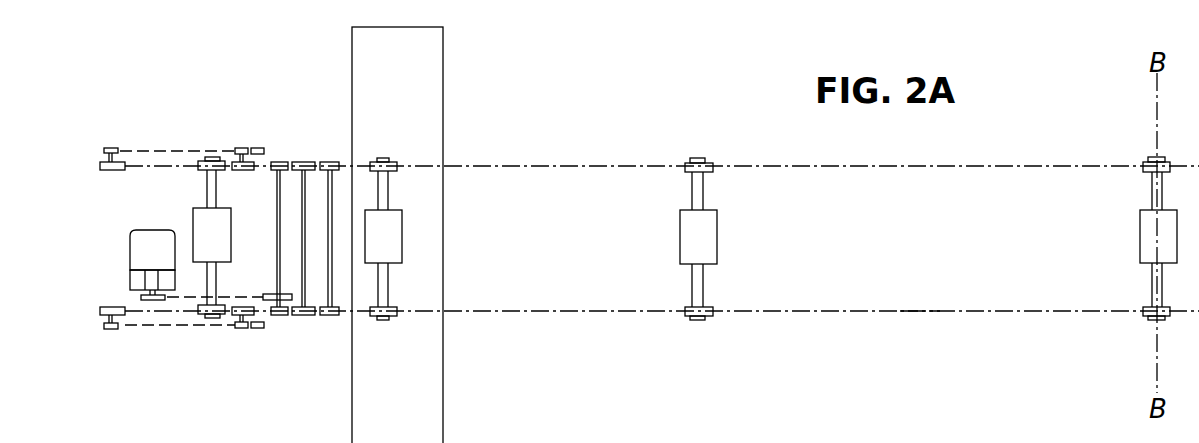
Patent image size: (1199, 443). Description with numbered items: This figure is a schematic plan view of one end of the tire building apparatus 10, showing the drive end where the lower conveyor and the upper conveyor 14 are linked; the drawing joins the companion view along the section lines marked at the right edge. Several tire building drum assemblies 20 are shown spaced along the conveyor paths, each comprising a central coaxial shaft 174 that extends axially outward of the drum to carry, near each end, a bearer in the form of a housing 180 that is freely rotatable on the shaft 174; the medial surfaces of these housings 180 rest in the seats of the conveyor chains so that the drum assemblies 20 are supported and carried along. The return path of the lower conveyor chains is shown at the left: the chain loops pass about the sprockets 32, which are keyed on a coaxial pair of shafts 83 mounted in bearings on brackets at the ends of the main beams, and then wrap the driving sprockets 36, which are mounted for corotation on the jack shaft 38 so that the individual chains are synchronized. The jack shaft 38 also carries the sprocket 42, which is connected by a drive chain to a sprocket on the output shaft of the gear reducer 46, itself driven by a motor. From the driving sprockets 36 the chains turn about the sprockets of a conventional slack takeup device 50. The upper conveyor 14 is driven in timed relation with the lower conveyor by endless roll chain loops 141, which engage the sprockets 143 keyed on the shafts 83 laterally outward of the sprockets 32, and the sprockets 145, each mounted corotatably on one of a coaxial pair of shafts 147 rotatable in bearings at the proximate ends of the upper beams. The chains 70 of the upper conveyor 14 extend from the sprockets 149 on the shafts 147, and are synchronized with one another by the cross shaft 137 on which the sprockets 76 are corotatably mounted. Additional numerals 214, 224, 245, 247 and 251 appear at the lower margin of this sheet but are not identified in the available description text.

The tire building apparatus 10 is at (569, 312).
The upper conveyor 14 is at (918, 311).
The tire building drum assembly 20 is at (193, 232).
The sprocket 32 is at (100, 170).
The driving sprocket 36 is at (274, 170).
The jack shaft 38 is at (277, 224).
The sprocket 42 is at (271, 295).
The gear reducer 46 is at (135, 278).
The slack takeup device 50 is at (330, 316).
The chain 70 is at (562, 166).
The sprocket 76 is at (296, 162).
The shaft 83 is at (104, 163).
The cross shaft 137 is at (305, 192).
The endless roll chain loop 141 is at (147, 150).
The sprocket 143 is at (110, 148).
The sprocket 145 is at (241, 148).
The shaft 147 is at (235, 162).
The sprocket 149 is at (232, 170).
The central coaxial shaft 174 is at (388, 290).
The housing 180 is at (397, 163).
The element 214 is at (133, 436).
The element 224 is at (203, 436).
The element 245 is at (305, 434).
The element 247 is at (258, 434).
The element 251 is at (163, 442).